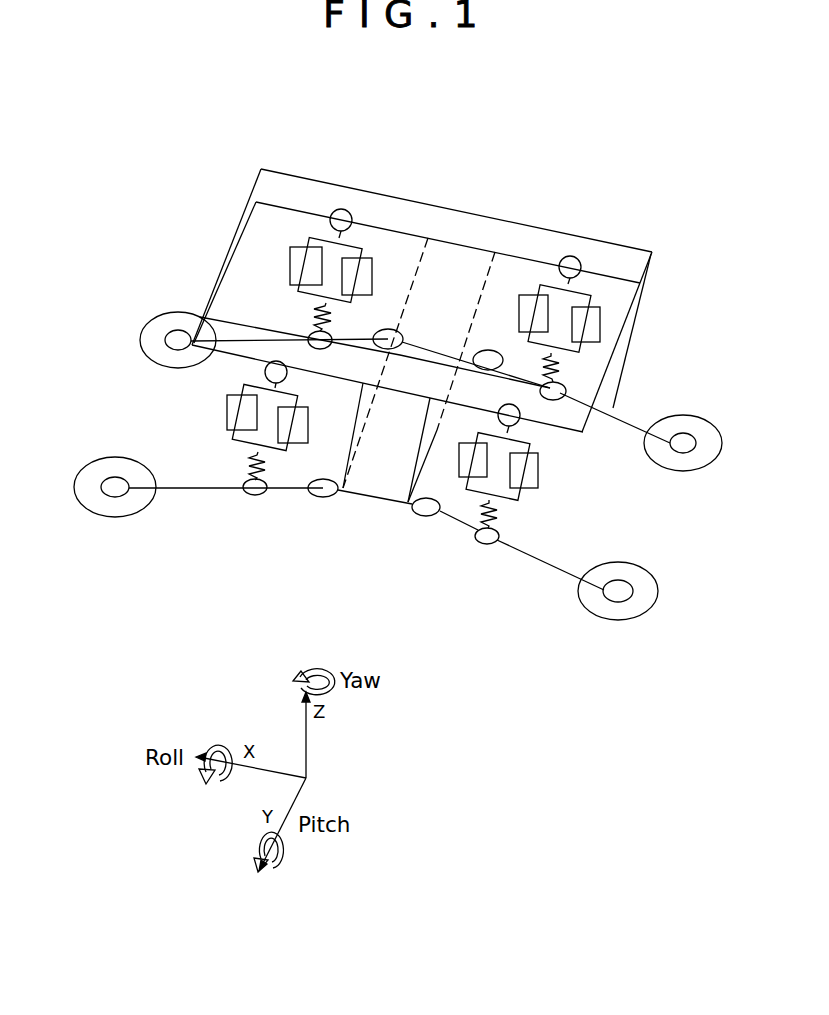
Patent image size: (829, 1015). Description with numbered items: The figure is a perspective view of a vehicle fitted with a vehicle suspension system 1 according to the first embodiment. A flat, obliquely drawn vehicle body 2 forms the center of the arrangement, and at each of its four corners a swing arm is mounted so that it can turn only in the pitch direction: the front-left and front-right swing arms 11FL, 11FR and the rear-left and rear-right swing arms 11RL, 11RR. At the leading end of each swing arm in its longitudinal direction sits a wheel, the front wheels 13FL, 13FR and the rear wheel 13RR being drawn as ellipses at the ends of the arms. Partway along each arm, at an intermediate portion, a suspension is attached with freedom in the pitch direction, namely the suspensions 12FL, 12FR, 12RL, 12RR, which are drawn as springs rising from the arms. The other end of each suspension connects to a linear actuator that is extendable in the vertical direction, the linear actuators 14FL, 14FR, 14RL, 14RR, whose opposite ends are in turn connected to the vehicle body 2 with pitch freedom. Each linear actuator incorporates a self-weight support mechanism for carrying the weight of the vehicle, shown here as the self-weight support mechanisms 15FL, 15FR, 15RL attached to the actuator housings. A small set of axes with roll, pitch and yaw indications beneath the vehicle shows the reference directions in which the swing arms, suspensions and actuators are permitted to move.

The vehicle suspension system 1 is at (397, 198).
The vehicle body 2 is at (477, 213).
The swing arm 11FR is at (307, 338).
The swing arm 11FL is at (160, 489).
The swing arm 11RR is at (607, 407).
The swing arm 11RL is at (538, 561).
The suspension 12FR is at (308, 323).
The suspension 12FL is at (247, 472).
The suspension 12RR is at (562, 374).
The suspension 12RL is at (486, 516).
The wheel 13FR is at (153, 310).
The wheel 13FL is at (138, 514).
The wheel 13RR is at (681, 421).
The linear actuator 14FR is at (342, 263).
The linear actuator 14FL is at (278, 441).
The linear actuator 14RR is at (597, 308).
The linear actuator 14RL is at (512, 468).
The self-weight support mechanism 15FR is at (288, 268).
The self-weight support mechanism 15FL is at (227, 410).
The self-weight support mechanism 15RL is at (532, 297).